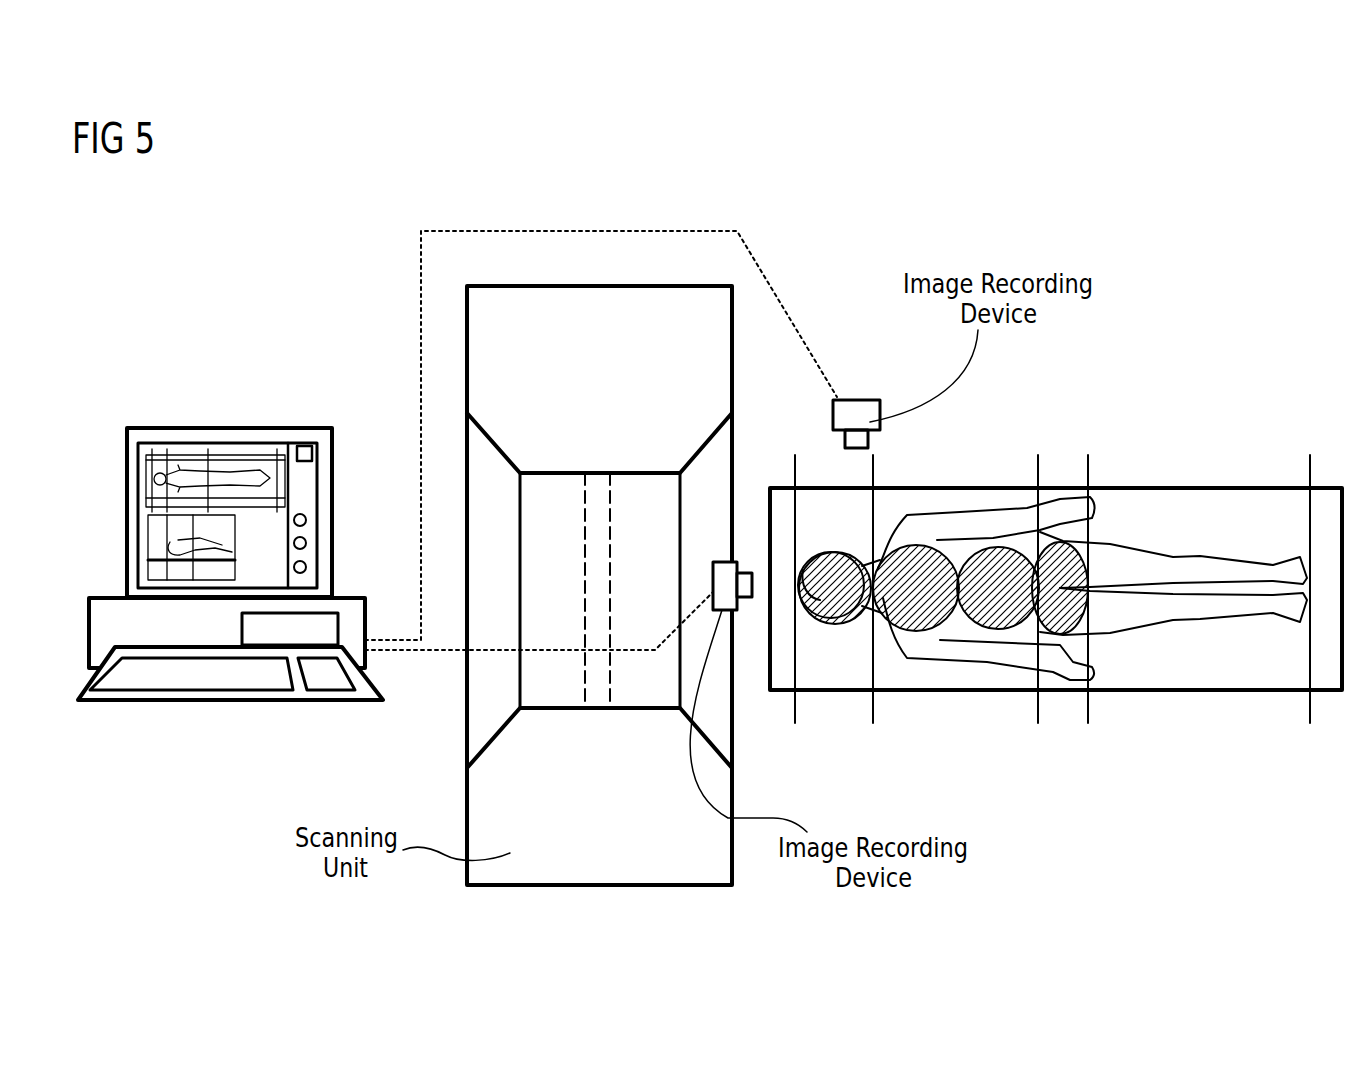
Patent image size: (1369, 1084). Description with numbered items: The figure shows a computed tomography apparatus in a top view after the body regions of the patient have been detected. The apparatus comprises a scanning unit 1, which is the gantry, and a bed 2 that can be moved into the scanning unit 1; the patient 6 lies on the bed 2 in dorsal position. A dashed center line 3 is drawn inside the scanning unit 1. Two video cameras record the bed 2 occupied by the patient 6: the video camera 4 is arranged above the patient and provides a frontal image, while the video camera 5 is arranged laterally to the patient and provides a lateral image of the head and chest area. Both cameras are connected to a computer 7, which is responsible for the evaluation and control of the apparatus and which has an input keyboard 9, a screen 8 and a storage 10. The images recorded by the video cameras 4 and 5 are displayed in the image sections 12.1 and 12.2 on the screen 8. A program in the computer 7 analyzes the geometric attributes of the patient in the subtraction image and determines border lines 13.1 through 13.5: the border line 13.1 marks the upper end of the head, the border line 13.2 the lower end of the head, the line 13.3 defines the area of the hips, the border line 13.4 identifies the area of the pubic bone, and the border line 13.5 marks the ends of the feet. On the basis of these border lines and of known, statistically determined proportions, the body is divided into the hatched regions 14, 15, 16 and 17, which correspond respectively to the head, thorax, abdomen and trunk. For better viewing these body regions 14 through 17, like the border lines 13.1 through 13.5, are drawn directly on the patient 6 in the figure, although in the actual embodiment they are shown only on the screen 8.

The scanning unit 1 is at (465, 840).
The bed 2 is at (1187, 487).
The scanning region center line 3 is at (597, 500).
The video camera 4 is at (737, 562).
The video camera 5 is at (867, 400).
The patient 6 is at (917, 513).
The computer 7 is at (87, 658).
The screen 8 is at (220, 428).
The input keyboard 9 is at (253, 707).
The storage 10 is at (322, 627).
The image section 12.1 is at (153, 467).
The image section 12.2 is at (153, 548).
The border line 13.1 is at (793, 713).
The border line 13.2 is at (872, 713).
The border line 13.3 is at (1038, 723).
The border line 13.4 is at (1088, 712).
The border line 13.5 is at (1308, 712).
The hatched region 14 is at (828, 595).
The hatched region 15 is at (913, 613).
The hatched region 16 is at (992, 610).
The hatched region 17 is at (1062, 635).